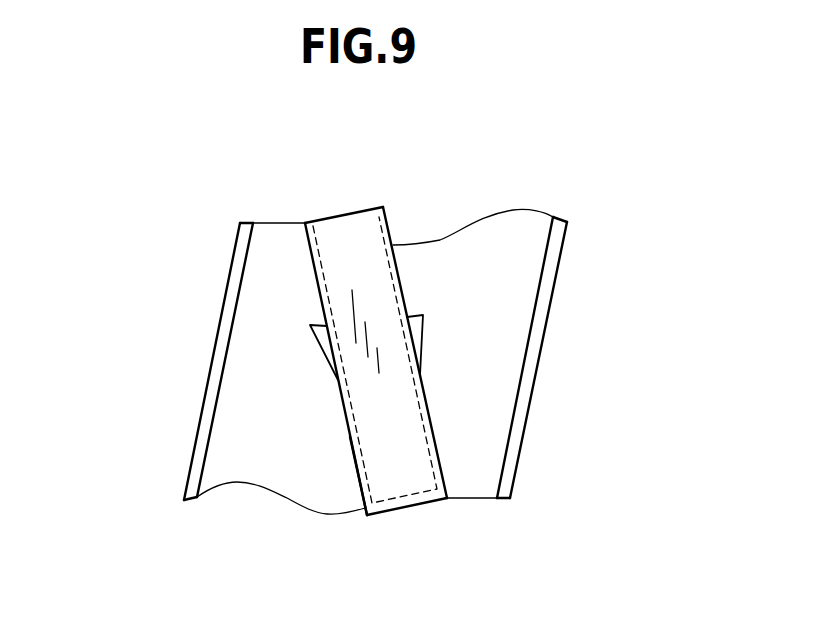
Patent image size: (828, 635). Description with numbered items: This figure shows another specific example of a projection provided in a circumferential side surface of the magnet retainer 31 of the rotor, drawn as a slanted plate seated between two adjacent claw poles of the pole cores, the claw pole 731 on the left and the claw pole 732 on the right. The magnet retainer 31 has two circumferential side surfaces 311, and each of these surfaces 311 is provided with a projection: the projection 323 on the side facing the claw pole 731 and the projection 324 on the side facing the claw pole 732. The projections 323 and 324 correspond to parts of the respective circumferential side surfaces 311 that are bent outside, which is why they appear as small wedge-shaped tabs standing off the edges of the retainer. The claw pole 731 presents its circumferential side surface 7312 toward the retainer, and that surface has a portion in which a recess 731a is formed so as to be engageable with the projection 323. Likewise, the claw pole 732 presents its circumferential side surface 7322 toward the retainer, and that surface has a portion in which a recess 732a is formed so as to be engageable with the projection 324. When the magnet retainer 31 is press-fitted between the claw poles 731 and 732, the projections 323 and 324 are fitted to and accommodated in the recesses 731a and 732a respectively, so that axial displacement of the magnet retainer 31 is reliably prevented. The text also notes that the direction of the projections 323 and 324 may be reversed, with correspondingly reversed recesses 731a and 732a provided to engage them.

The magnet retainer 31 is at (423, 344).
The circumferential side surface 311 is at (349, 437).
The circumferential side surface 7312 is at (357, 468).
The circumferential side surface 7322 is at (393, 245).
The projection 323 is at (315, 340).
The projection 324 is at (420, 333).
The claw pole 731 is at (222, 342).
The recess 731a is at (312, 322).
The claw pole 732 is at (521, 319).
The recess 732a is at (418, 318).